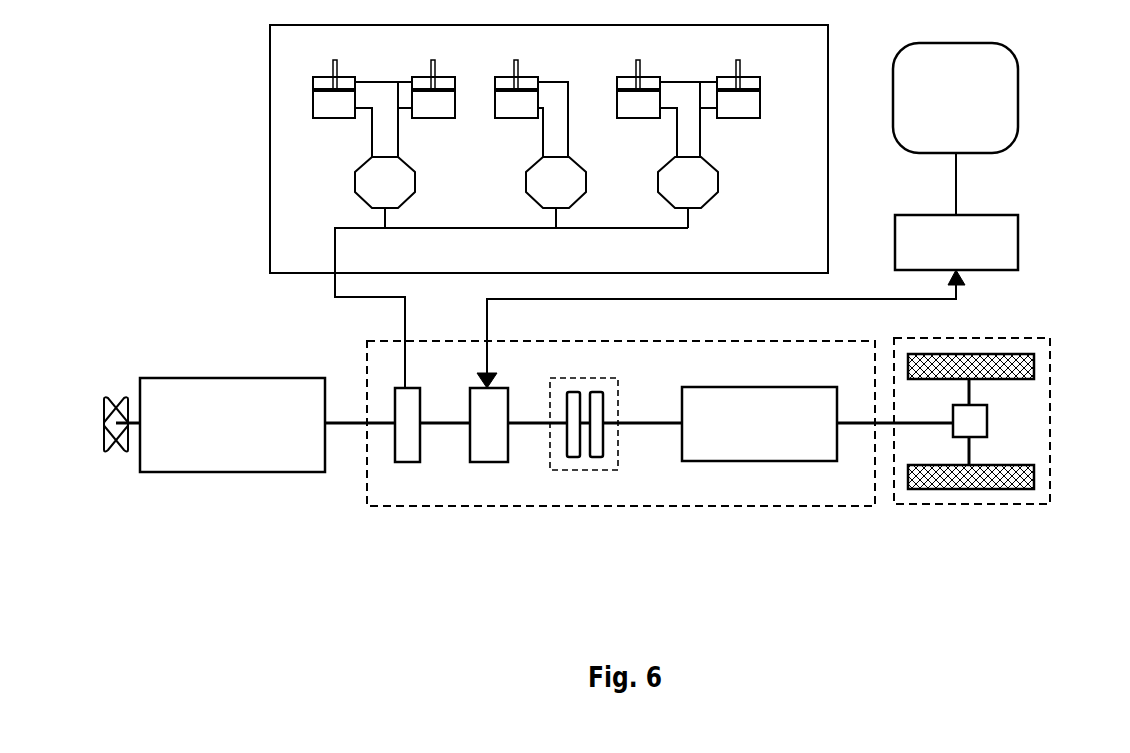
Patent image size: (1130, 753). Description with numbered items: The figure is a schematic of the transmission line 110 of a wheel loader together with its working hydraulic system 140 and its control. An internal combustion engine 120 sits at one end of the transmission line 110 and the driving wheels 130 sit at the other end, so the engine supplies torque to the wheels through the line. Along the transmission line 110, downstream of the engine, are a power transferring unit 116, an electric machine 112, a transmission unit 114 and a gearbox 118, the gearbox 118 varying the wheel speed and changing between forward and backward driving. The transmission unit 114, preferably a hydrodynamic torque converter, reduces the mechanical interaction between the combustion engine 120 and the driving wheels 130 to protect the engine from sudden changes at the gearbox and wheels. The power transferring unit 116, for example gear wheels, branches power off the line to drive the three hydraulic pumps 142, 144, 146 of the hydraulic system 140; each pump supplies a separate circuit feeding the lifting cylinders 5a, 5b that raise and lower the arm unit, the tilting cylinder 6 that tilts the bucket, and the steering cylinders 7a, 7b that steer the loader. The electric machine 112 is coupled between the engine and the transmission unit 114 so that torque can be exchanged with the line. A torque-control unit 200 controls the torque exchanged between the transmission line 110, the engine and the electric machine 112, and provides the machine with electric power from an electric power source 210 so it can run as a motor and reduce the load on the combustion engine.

The lifting cylinder 5a is at (345, 78).
The lifting cylinder 5b is at (443, 78).
The tilting cylinder 6 is at (525, 78).
The steering cylinder 7a is at (649, 78).
The steering cylinder 7b is at (749, 78).
The transmission line 110 is at (368, 348).
The electric machine 112 is at (488, 462).
The transmission unit 114 is at (584, 470).
The power transferring unit 116 is at (407, 462).
The gearbox 118 is at (752, 461).
The internal combustion engine 120 is at (190, 386).
The driving wheels 130 is at (1036, 388).
The working hydraulic system 140 is at (295, 41).
The hydraulic pump 142 is at (392, 198).
The hydraulic pump 144 is at (564, 198).
The hydraulic pump 146 is at (694, 198).
The torque-control unit 200 is at (956, 242).
The electric power source 210 is at (1000, 59).